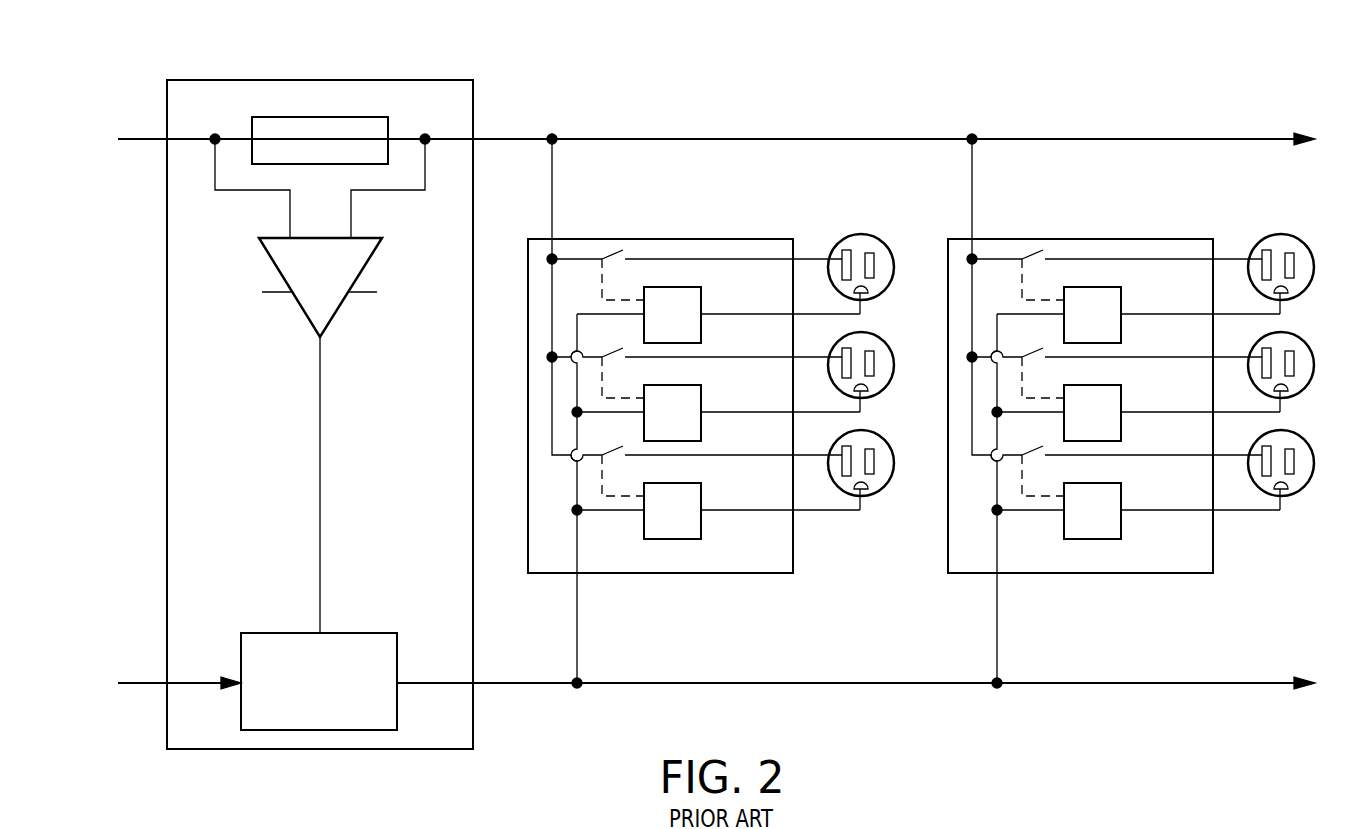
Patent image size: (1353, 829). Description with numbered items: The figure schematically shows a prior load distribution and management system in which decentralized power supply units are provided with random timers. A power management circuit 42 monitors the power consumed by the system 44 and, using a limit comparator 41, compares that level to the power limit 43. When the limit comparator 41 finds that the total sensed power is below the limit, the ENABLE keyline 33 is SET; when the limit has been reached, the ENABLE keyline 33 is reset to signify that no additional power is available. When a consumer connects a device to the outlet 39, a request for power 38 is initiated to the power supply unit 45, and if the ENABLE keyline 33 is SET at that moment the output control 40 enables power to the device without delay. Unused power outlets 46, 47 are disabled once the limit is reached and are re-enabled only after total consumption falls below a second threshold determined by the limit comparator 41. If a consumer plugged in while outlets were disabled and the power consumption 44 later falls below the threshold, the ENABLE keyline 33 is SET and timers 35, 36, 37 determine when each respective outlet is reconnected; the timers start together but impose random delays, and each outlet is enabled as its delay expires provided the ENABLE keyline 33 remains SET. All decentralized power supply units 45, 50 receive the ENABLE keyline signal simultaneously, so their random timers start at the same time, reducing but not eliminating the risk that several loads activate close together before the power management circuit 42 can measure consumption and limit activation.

The ENABLE keyline 33 is at (531, 683).
The timer 35 is at (701, 520).
The timer 36 is at (701, 422).
The timer 37 is at (701, 324).
The request for power 38 is at (860, 314).
The outlet 39 is at (859, 234).
The output control 40 is at (616, 254).
The limit comparator 41 is at (382, 633).
The power management circuit 42 is at (265, 80).
The power limit 43 is at (208, 683).
The power consumed by the system 44 is at (252, 282).
The power supply unit 45 is at (727, 239).
The power outlet 46 is at (884, 386).
The power outlet 47 is at (884, 484).
The power supply unit 50 is at (1146, 239).